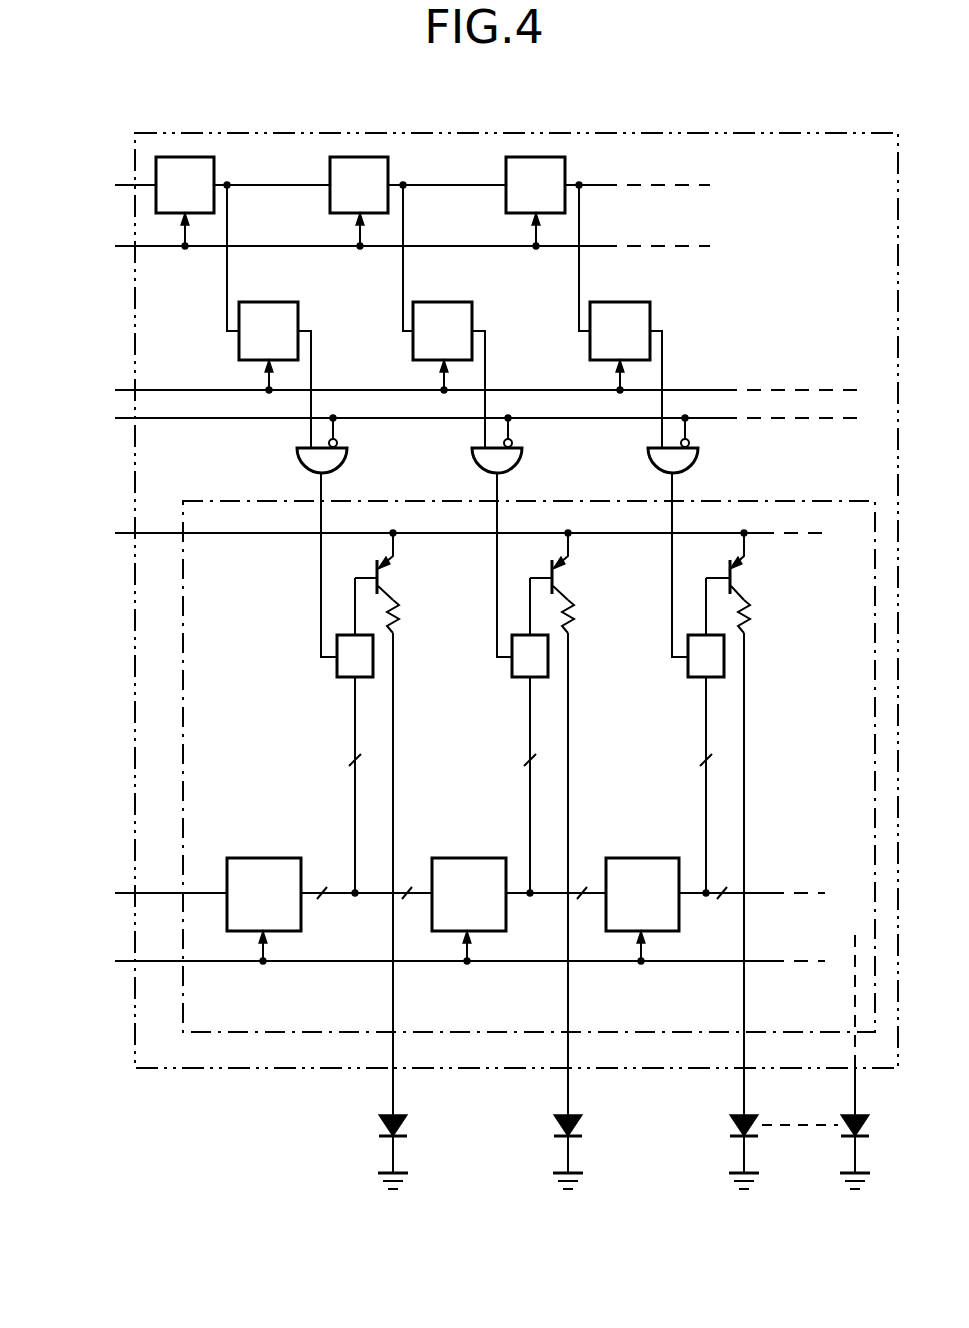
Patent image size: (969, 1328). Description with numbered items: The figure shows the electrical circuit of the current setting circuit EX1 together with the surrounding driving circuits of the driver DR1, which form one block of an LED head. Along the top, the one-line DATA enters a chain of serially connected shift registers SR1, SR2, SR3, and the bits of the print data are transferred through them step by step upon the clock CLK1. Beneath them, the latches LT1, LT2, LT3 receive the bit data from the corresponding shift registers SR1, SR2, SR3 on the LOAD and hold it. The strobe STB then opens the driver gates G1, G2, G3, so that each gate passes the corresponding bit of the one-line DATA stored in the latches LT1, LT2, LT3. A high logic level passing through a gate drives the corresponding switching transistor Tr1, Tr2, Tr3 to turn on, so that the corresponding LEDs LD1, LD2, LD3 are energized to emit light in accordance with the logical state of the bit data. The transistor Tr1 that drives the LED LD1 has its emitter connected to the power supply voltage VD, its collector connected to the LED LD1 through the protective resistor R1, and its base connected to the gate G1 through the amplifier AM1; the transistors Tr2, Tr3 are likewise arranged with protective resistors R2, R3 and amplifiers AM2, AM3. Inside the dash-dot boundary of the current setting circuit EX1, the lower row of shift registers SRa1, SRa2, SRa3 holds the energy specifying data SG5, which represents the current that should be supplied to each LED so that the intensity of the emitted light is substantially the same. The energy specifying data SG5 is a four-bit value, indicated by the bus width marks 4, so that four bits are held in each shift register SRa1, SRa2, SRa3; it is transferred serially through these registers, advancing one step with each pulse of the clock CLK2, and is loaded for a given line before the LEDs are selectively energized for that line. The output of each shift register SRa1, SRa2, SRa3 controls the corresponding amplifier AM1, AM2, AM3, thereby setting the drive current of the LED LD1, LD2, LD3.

The driver DR1 is at (747, 133).
The current setting circuit EX1 is at (753, 498).
The one-line DATA is at (385, 185).
The clock signal CLK1 is at (385, 246).
The load signal LOAD is at (458, 390).
The strobe signal STB is at (466, 418).
The power supply voltage VD is at (457, 533).
The energy specifying data SG5 is at (448, 893).
The clock CLK2 is at (443, 961).
The shift register SR1 is at (197, 244).
The shift register SR2 is at (371, 244).
The shift register SR3 is at (548, 244).
The latch LT1 is at (275, 375).
The latch LT2 is at (449, 375).
The latch LT3 is at (626, 375).
The driver gate G1 is at (334, 536).
The driver gate G2 is at (509, 536).
The driver gate G3 is at (685, 536).
The switching transistor Tr1 is at (391, 565).
The switching transistor Tr2 is at (566, 565).
The switching transistor Tr3 is at (743, 565).
The protective resistor R1 is at (408, 616).
The protective resistor R2 is at (583, 616).
The protective resistor R3 is at (759, 616).
The amplifier AM1 is at (337, 737).
The amplifier AM2 is at (512, 737).
The amplifier AM3 is at (688, 737).
The 4-bit value 4 is at (525, 834).
The shift register SRa1 is at (264, 911).
The shift register SRa2 is at (469, 911).
The shift register SRa3 is at (642, 911).
The LED LD1 is at (410, 911).
The LED LD2 is at (586, 911).
The LED LD3 is at (762, 911).